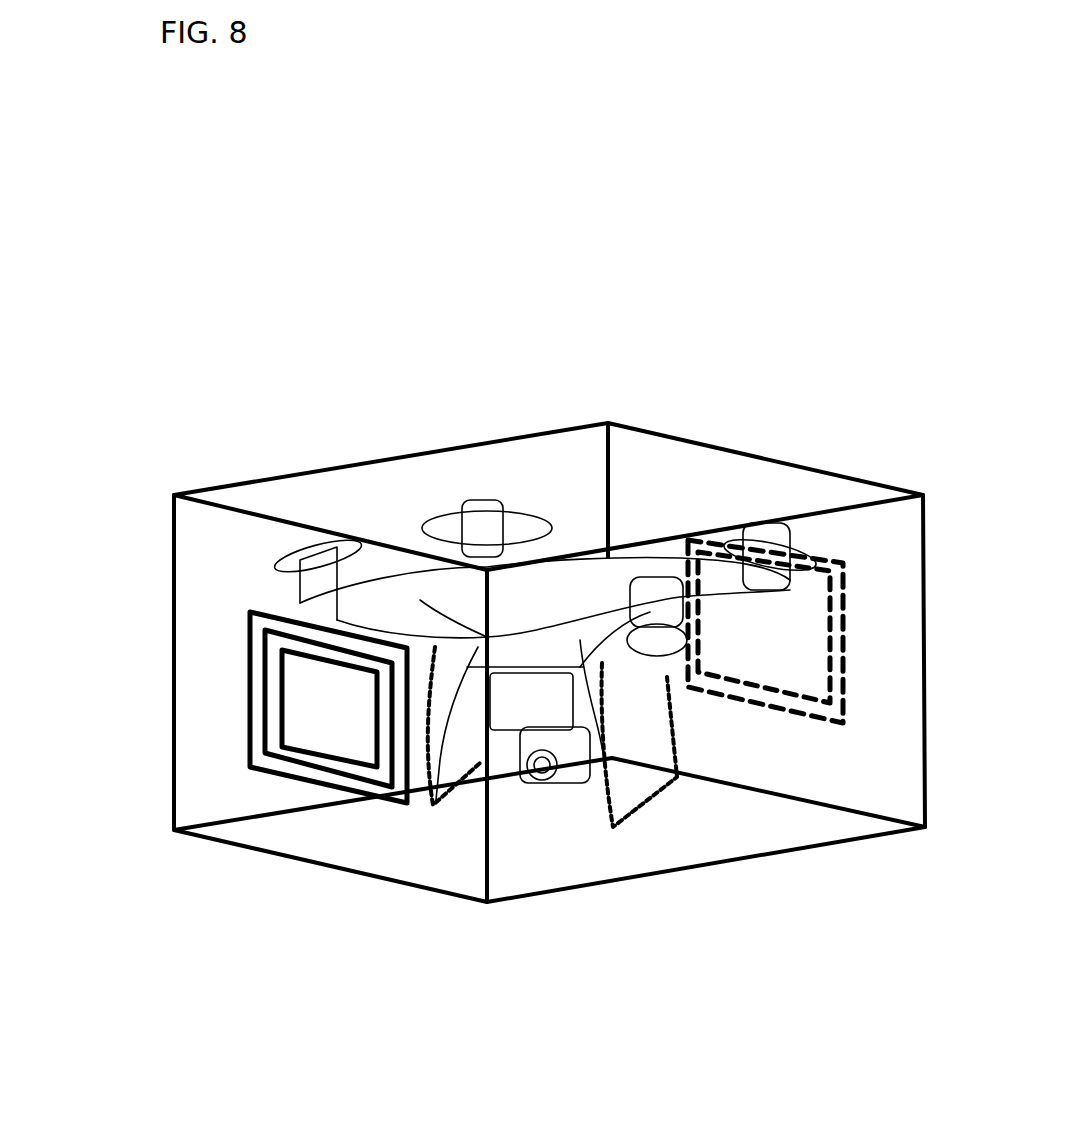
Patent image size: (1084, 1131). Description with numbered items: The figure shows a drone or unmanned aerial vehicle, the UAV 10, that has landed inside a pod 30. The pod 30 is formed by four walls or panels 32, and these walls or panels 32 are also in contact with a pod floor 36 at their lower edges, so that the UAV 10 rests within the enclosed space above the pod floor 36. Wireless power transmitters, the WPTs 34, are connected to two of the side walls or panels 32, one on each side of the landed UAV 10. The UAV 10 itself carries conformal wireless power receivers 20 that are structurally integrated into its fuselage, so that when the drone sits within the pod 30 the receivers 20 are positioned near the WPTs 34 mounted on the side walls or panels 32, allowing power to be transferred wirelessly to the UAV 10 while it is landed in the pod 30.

The UAV 10 is at (566, 543).
The conformal wireless power receivers 20 is at (433, 806).
The pod 30 is at (767, 258).
The walls or panels 32 is at (263, 517).
The WPTs 34 is at (250, 708).
The pod floor 36 is at (763, 820).